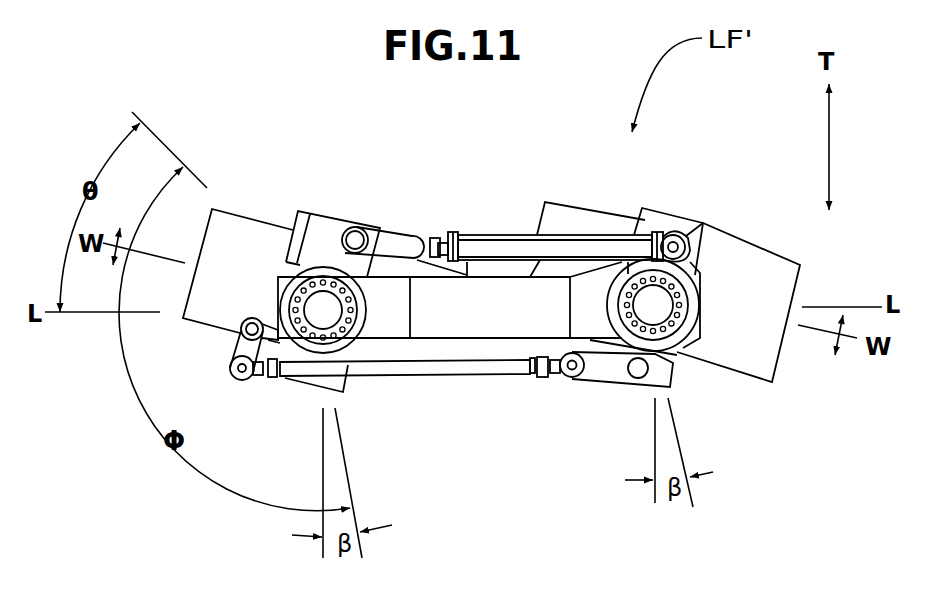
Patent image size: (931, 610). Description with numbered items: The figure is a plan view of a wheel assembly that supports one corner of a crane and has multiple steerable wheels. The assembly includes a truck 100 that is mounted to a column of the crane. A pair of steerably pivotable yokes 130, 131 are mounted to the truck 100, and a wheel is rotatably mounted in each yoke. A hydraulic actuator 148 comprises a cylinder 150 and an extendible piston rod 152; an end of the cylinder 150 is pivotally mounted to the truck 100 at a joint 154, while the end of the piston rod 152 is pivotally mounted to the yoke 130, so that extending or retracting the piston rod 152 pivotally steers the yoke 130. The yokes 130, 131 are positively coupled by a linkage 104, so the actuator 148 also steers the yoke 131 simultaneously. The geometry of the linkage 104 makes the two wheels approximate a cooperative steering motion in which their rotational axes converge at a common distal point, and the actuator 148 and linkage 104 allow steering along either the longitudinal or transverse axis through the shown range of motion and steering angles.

The truck 100 is at (396, 323).
The linkage 104 is at (490, 385).
The yoke 130 is at (327, 228).
The yoke 131 is at (656, 222).
The hydraulic actuator 148 is at (562, 182).
The cylinder 150 is at (507, 232).
The piston rod 152 is at (440, 233).
The joint 154 is at (690, 231).